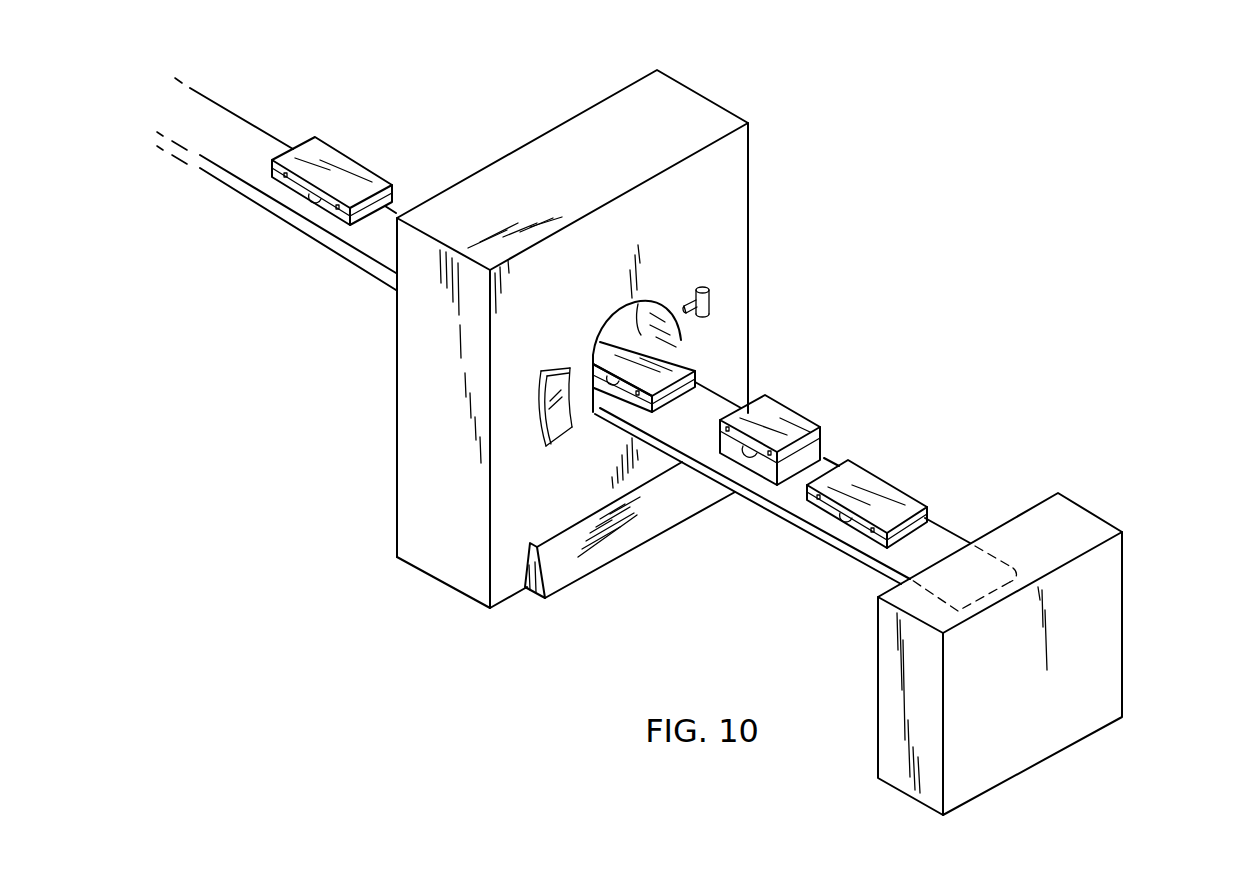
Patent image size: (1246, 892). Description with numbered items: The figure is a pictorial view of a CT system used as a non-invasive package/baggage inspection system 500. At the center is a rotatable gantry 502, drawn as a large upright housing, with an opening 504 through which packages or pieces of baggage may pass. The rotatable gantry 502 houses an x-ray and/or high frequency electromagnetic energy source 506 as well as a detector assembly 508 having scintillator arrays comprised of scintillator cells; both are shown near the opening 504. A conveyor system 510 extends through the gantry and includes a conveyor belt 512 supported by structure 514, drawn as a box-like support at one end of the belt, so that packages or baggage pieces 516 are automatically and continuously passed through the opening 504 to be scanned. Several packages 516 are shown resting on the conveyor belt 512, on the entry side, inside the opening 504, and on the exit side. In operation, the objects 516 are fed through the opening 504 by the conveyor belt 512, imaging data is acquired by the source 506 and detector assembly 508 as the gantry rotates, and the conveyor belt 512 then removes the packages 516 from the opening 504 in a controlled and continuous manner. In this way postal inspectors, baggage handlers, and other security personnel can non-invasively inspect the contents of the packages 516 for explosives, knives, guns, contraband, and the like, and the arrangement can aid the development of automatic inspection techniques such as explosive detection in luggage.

The package/baggage inspection system 500 is at (1004, 357).
The rotatable gantry 502 is at (671, 219).
The opening 504 is at (674, 345).
The x-ray and/or high frequency electromagnetic energy source 506 is at (710, 302).
The detector assembly 508 is at (557, 380).
The conveyor system 510 is at (198, 208).
The conveyor belt 512 is at (373, 238).
The structure 514 is at (1123, 595).
The packages or baggage pieces 516 is at (333, 167).